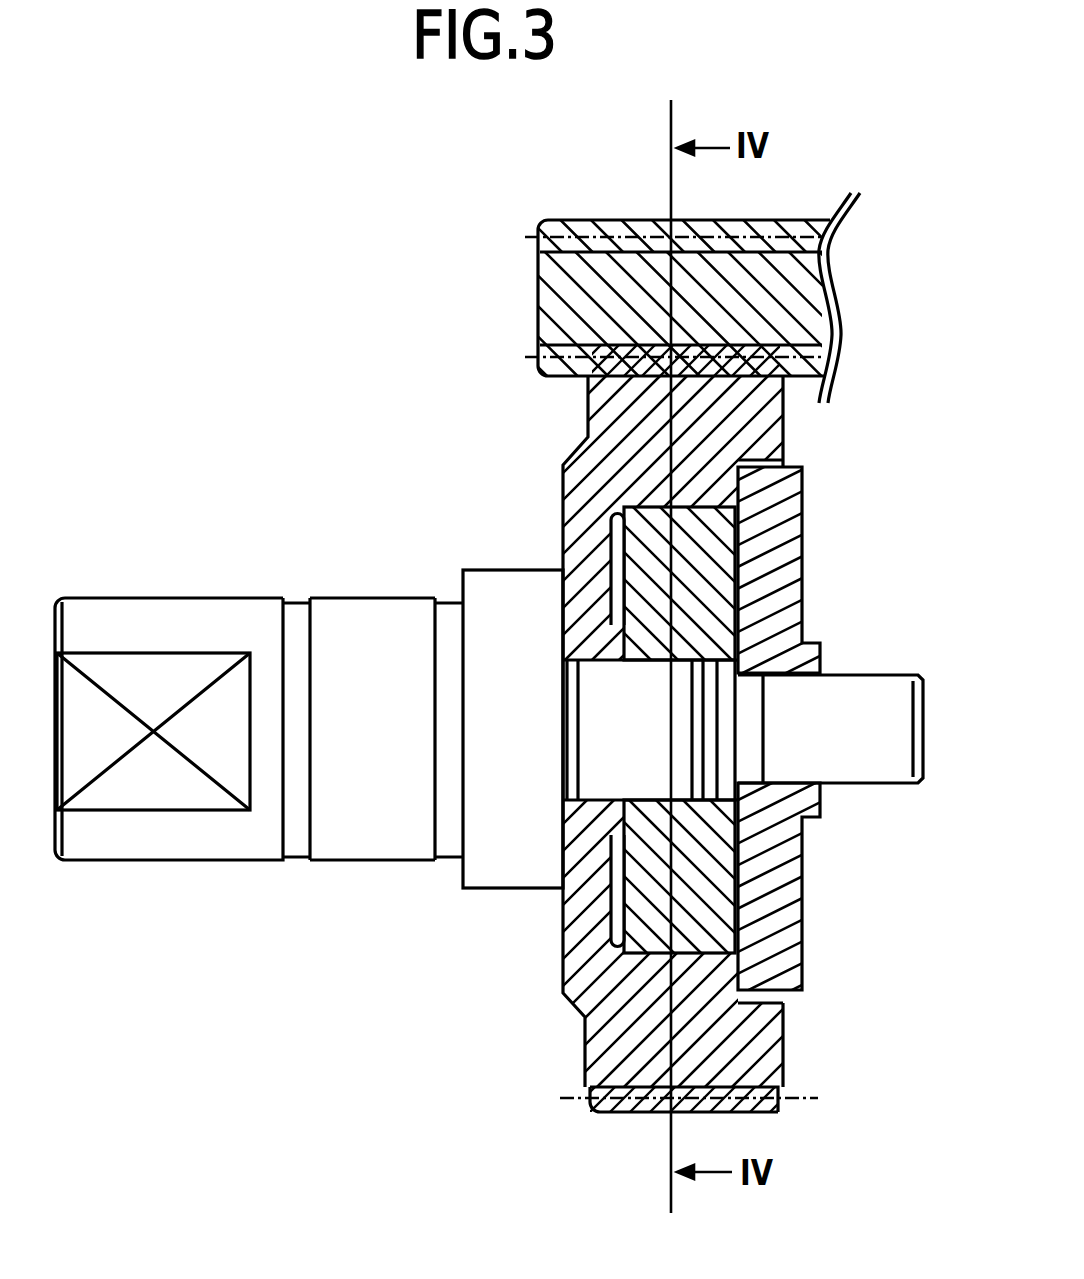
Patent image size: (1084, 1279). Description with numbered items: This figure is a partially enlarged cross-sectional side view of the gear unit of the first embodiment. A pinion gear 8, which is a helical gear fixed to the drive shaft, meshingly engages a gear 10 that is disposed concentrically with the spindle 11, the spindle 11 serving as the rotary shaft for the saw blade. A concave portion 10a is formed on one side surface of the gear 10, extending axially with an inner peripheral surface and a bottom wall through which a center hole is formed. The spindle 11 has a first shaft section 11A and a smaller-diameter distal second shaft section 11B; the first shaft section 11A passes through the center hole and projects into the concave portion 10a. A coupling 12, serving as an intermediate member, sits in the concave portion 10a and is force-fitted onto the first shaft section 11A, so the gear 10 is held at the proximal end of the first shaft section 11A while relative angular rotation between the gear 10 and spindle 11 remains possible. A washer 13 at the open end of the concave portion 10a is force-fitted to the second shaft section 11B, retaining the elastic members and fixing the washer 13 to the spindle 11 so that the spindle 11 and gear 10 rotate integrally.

The pinion gear 8 is at (770, 218).
The gear 10 is at (758, 415).
The concave portion 10a is at (613, 924).
The spindle 11 is at (380, 627).
The first shaft section 11A is at (612, 766).
The second shaft section 11B is at (853, 763).
The coupling 12 is at (655, 567).
The washer 13 is at (803, 523).